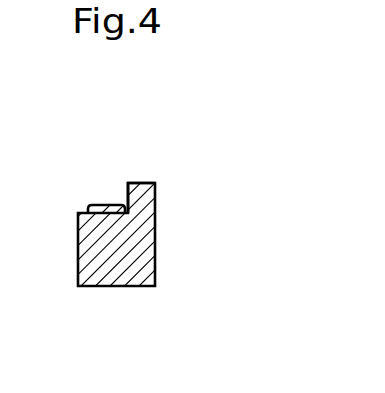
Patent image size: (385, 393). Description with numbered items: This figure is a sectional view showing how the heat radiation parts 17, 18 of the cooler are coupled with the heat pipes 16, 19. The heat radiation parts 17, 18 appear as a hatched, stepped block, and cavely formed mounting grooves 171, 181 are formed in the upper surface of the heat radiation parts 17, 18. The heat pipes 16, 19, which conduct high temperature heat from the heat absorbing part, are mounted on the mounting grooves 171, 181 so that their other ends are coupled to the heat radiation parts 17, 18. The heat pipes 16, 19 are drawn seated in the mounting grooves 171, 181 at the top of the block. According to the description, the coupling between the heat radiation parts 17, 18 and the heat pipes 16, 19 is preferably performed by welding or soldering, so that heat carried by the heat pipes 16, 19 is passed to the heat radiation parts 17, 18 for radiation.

The heat pipe 16 is at (84, 160).
The heat pipe 19 is at (104, 210).
The heat radiation part 17 is at (189, 246).
The heat radiation part 18 is at (155, 234).
The mounting groove 171 is at (119, 278).
The mounting groove 181 is at (126, 213).